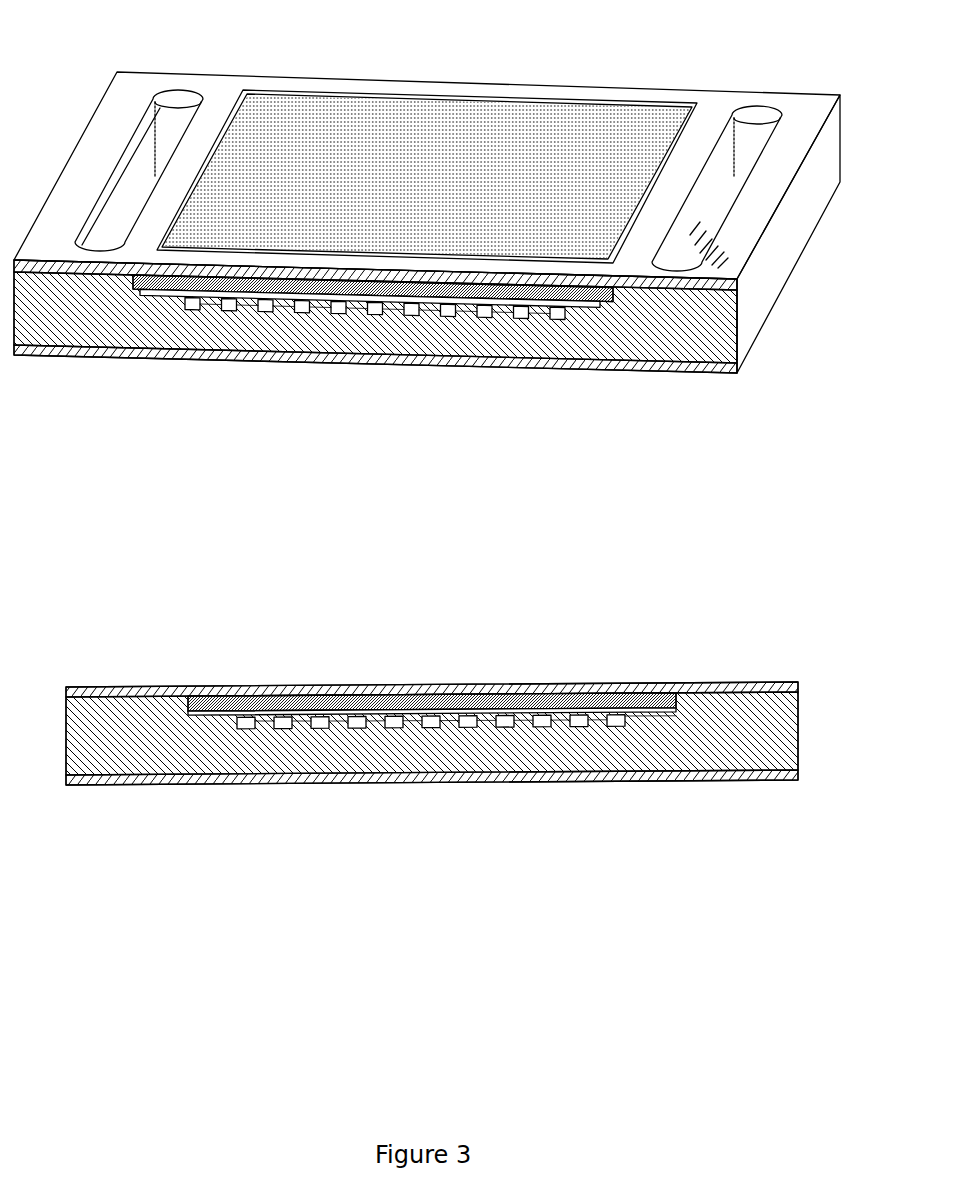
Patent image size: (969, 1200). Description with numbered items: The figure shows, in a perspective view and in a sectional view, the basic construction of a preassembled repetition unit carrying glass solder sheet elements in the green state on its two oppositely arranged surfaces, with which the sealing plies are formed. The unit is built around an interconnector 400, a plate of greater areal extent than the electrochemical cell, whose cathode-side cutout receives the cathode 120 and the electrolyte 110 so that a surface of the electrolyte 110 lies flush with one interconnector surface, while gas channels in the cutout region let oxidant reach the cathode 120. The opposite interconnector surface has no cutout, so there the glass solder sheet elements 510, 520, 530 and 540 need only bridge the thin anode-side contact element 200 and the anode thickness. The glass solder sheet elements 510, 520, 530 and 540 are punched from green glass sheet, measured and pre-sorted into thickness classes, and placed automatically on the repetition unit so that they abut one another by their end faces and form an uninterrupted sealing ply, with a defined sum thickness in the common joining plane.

The electrolyte 110 is at (550, 305).
The cathode 120 is at (460, 310).
The anode-side contact element 200 is at (245, 303).
The interconnector 400 is at (697, 340).
The glass solder sheet element 510 is at (223, 92).
The glass solder sheet element 520 is at (713, 100).
The glass solder sheet element 530 is at (262, 267).
The glass solder sheet element 540 is at (477, 90).